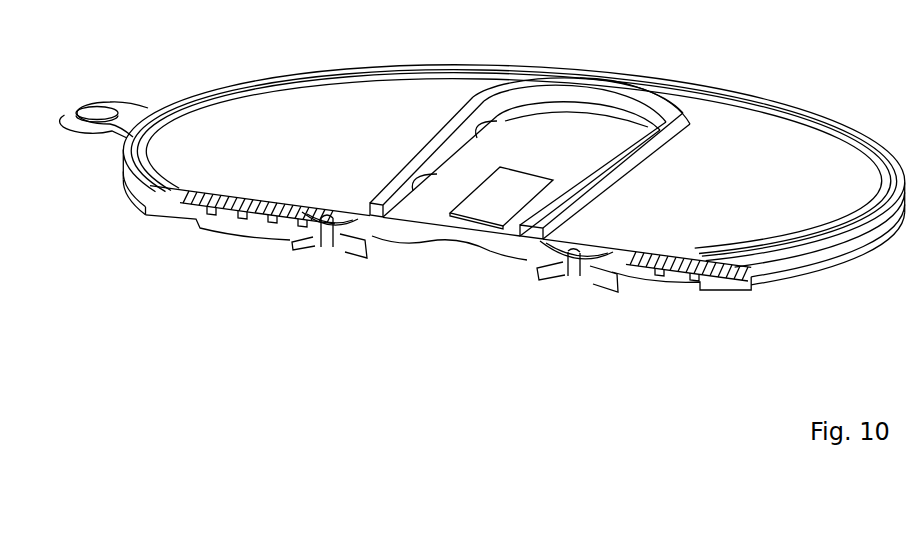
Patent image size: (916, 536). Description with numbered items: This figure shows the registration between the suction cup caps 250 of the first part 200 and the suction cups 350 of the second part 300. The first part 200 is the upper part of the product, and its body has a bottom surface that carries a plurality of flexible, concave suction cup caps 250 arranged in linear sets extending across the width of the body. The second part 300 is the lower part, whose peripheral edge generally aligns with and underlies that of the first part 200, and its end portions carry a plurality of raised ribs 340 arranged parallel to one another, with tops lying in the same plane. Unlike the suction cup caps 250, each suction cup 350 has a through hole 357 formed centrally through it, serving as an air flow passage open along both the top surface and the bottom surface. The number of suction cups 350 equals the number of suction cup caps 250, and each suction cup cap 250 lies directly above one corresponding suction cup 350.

The first part 200 is at (353, 100).
The suction cup caps 250 is at (308, 208).
The second part 300 is at (411, 249).
The raised ribs 340 is at (243, 218).
The suction cups 350 is at (310, 247).
The through hole 357 is at (329, 217).